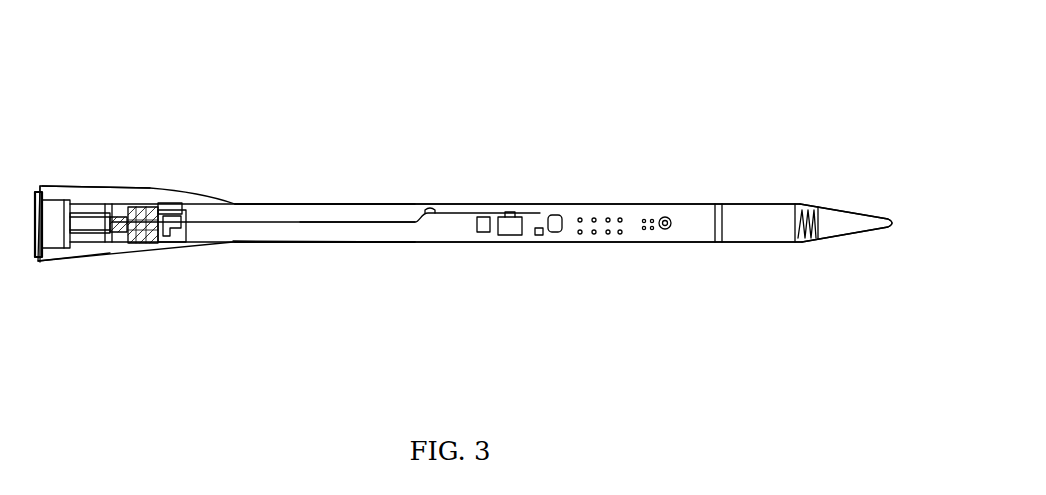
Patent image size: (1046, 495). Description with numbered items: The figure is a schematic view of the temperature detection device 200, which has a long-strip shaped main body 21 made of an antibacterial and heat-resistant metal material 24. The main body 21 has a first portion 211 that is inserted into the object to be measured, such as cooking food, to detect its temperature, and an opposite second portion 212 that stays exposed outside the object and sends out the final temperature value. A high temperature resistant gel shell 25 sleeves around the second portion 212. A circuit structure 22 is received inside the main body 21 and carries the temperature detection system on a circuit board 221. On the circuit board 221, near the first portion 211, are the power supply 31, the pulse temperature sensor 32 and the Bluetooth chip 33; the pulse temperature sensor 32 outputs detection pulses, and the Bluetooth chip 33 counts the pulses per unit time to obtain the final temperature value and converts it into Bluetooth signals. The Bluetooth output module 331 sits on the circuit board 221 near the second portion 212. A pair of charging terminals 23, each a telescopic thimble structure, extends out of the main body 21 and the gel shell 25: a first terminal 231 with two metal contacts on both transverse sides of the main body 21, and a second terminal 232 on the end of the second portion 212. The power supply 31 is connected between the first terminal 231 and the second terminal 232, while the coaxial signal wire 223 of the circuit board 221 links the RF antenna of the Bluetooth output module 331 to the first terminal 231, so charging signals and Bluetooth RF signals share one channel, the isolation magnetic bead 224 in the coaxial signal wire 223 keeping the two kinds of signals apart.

The temperature detection device 200 is at (398, 40).
The main body 21 is at (545, 186).
The first portion 211 is at (829, 190).
The second portion 212 is at (97, 169).
The circuit structure 22 is at (549, 250).
The circuit board 221 is at (693, 232).
The coaxial signal wire 223 is at (381, 222).
The isolation magnetic bead 224 is at (530, 212).
The pair of charging terminals 23 is at (360, 325).
The first terminal 231 is at (422, 243).
The second terminal 232 is at (35, 263).
The antibacterial and heat-resistant metal material 24 is at (326, 204).
The gel shell 25 is at (152, 187).
The power supply 31 is at (753, 214).
The pulse temperature sensor 32 is at (652, 229).
The Bluetooth chip 33 is at (508, 230).
The Bluetooth output module 331 is at (182, 212).